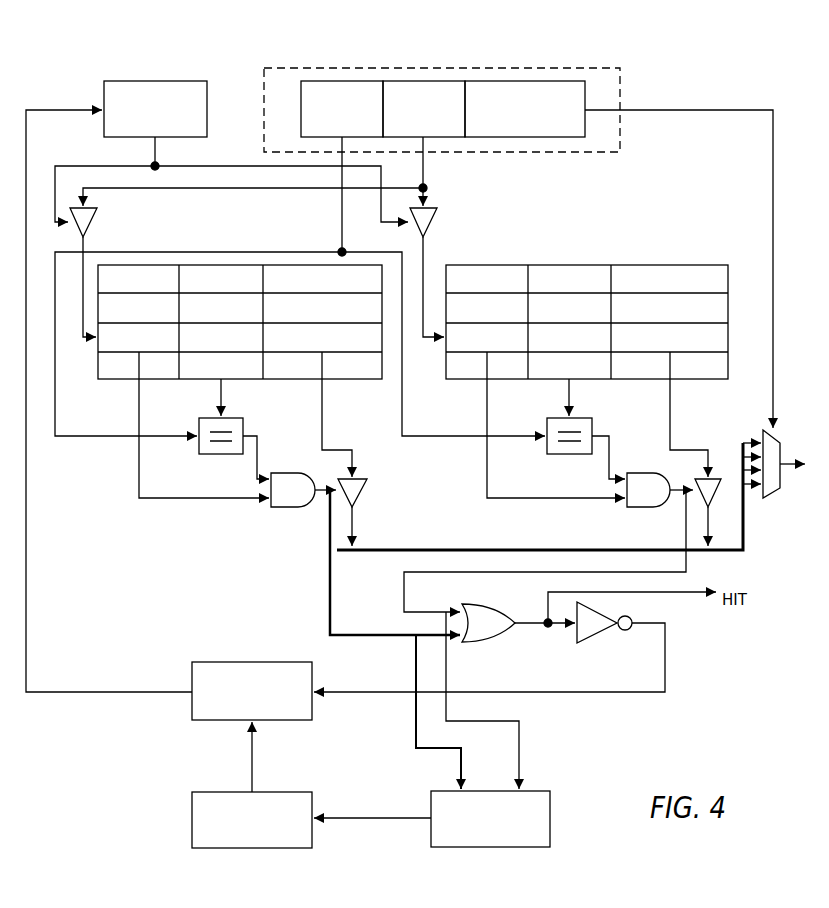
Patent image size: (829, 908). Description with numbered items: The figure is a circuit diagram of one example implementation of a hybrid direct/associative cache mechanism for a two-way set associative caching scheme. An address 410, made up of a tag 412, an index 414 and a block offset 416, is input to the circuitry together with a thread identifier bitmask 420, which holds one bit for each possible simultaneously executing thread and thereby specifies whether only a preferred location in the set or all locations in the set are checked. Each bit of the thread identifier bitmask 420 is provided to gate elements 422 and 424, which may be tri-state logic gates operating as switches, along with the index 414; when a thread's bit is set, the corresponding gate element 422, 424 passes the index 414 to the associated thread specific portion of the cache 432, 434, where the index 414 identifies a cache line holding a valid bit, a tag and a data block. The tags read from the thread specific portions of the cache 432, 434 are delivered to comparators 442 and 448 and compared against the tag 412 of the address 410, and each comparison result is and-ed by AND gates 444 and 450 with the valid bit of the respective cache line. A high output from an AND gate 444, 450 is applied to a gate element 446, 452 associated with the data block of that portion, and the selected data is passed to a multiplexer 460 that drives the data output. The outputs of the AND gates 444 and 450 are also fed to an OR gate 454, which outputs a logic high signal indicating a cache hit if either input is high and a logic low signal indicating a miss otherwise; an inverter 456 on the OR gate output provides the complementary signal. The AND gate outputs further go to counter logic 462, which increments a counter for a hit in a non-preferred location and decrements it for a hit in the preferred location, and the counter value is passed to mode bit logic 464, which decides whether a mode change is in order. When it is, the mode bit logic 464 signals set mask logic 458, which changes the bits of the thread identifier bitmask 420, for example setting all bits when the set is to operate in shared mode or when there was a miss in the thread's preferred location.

The address 410 is at (280, 68).
The tag 412 is at (342, 80).
The index 414 is at (423, 80).
The block offset field 416 is at (528, 80).
The thread identifier bitmask 420 is at (155, 80).
The gate element 422 is at (97, 225).
The gate element 424 is at (437, 225).
The thread specific portion of the cache 432 is at (120, 382).
The thread specific portion of the cache 434 is at (670, 264).
The comparator 442 is at (243, 422).
The AND gate 444 is at (290, 507).
The gate element 446 is at (367, 490).
The comparator 448 is at (592, 422).
The AND gate 450 is at (645, 473).
The gate element 452 is at (721, 487).
The OR gate 454 is at (510, 642).
The inverter 456 is at (595, 640).
The set mask logic 458 is at (272, 722).
The multiplexer 460 is at (770, 498).
The counter logic 462 is at (493, 848).
The mode bit logic 464 is at (258, 850).